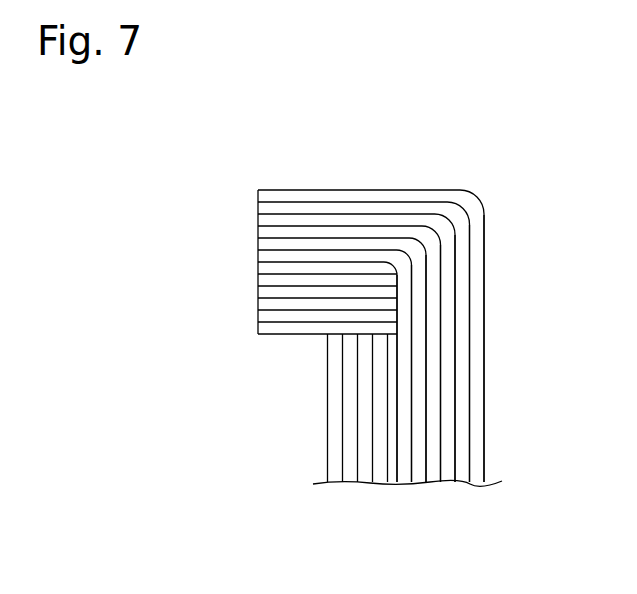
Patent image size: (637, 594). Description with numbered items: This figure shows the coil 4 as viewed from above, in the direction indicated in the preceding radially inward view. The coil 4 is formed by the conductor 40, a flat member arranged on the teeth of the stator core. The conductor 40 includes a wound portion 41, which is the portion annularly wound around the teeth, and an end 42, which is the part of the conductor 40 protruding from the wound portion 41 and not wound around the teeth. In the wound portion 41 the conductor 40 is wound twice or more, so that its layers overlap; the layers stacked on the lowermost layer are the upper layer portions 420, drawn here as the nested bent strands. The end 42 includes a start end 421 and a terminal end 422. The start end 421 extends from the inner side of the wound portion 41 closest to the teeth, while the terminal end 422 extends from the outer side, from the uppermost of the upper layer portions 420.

The coil 4 is at (227, 175).
The conductor 40 is at (307, 190).
The upper layer portion 420 is at (278, 336).
The wound portion 41 is at (250, 190).
The end 42 is at (485, 529).
The start end 421 is at (392, 488).
The terminal end 422 is at (487, 488).